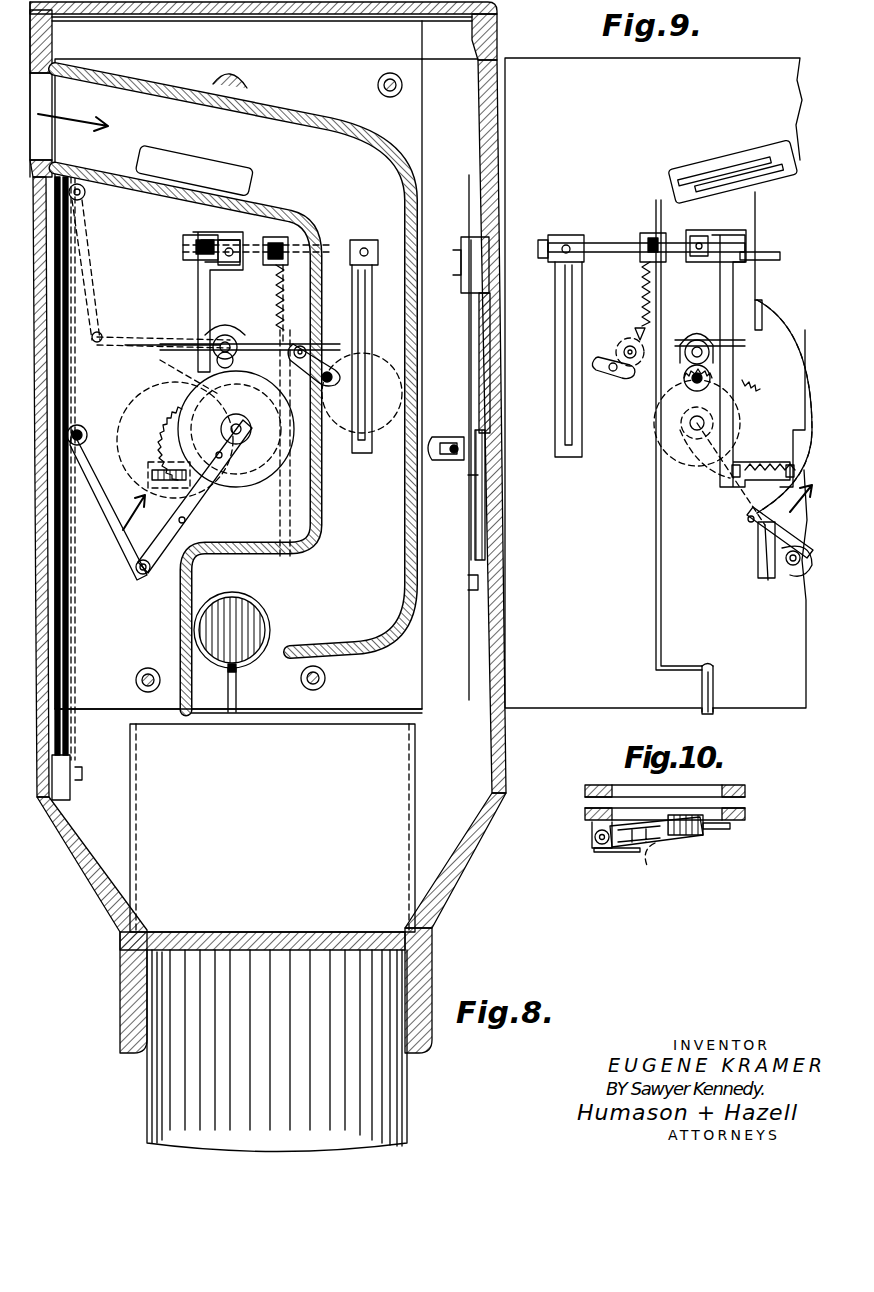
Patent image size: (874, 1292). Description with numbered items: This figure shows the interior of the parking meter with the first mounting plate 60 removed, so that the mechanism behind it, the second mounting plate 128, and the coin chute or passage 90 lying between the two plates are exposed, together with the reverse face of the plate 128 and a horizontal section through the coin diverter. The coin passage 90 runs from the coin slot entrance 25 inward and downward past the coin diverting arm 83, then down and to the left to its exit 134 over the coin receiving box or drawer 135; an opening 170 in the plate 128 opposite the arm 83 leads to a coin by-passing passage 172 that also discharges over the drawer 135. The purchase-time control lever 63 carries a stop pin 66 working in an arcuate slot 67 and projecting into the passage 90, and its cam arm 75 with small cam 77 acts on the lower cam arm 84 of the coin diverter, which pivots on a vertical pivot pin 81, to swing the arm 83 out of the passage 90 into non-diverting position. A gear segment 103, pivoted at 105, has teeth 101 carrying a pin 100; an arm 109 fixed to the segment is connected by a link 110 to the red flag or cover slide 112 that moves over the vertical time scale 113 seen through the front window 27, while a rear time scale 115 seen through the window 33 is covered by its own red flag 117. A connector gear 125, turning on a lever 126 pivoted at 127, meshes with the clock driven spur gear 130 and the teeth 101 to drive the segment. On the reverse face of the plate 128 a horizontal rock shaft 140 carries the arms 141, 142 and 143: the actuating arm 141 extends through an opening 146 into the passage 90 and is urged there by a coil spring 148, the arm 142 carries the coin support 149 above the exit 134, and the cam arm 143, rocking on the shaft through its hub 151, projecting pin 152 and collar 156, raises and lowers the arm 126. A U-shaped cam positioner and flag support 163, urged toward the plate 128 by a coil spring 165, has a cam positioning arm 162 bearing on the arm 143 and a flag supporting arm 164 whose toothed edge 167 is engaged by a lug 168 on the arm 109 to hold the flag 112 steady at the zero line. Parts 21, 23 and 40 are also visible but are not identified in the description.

In FIG. 8, the casing 21 is at (102, 880).
In FIG. 8, the cylinder / container 23 is at (277, 1051).
In FIG. 8, the coin slot entrance 25 is at (40, 98).
In FIG. 8, the front window 27 is at (60, 368).
In FIG. 8, the window 33 is at (480, 340).
In FIG. 8, the top cover 40 is at (272, 0).
In FIG. 10, the first mounting plate 60 is at (745, 818).
In FIG. 9, the purchase-time control lever 63 is at (600, 365).
In FIG. 8, the stop pin 66 is at (340, 372).
In FIG. 9, the stop pin 66 is at (610, 378).
In FIG. 8, the arcuate limited slot 67 is at (330, 365).
In FIG. 9, the arcuate limited slot 67 is at (632, 378).
In FIG. 10, the cam arm 75 is at (718, 830).
In FIG. 10, the cam 77 is at (648, 867).
In FIG. 10, the vertical pivot pin 81 is at (596, 838).
In FIG. 9, the coin diverting arm 83 is at (740, 158).
In FIG. 10, the coin diverting arm 83 is at (675, 842).
In FIG. 10, the cam arm of coin diverter 84 is at (625, 852).
In FIG. 8, the coin chute 90 is at (325, 140).
In FIG. 10, the coin chute 90 is at (598, 800).
In FIG. 8, the pin 100 is at (262, 375).
In FIG. 8, the gear teeth 101 is at (199, 430).
In FIG. 9, the gear teeth 101 is at (755, 410).
In FIG. 8, the gear segment 103 is at (242, 470).
In FIG. 9, the gear segment 103 is at (694, 480).
In FIG. 8, the pivot 105 is at (242, 447).
In FIG. 9, the pivot 105 is at (690, 430).
In FIG. 8, the flag lifting arm 109 is at (190, 503).
In FIG. 9, the flag lifting arm 109 is at (782, 548).
In FIG. 8, the link 110 is at (84, 230).
In FIG. 9, the link 110 is at (800, 575).
In FIG. 8, the cover slide 112 is at (52, 398).
In FIG. 8, the vertical time scale 113 is at (65, 567).
In FIG. 8, the rear time scale 115 is at (470, 290).
In FIG. 8, the rear time scale cover 117 is at (472, 490).
In FIG. 8, the connector gear 125 is at (236, 336).
In FIG. 9, the connector gear 125 is at (706, 338).
In FIG. 8, the connector-gear carrying arm 126 is at (195, 350).
In FIG. 9, the connector-gear carrying arm 126 is at (690, 335).
In FIG. 8, the pivot 127 is at (308, 345).
In FIG. 9, the pivot 127 is at (628, 345).
In FIG. 8, the second mounting plate 128 is at (335, 72).
In FIG. 9, the second mounting plate 128 is at (555, 75).
In FIG. 10, the second mounting plate 128 is at (600, 786).
In FIG. 9, the clock driven spur gear 130 is at (695, 388).
In FIG. 8, the coin passage exit 134 is at (235, 700).
In FIG. 9, the coin passage exit 134 is at (712, 710).
In FIG. 8, the coin receiving box 135 is at (150, 808).
In FIG. 8, the horizontal rock shaft 140 is at (330, 243).
In FIG. 9, the horizontal rock shaft 140 is at (590, 245).
In FIG. 8, the rock shaft actuating arm 141 is at (365, 270).
In FIG. 9, the rock shaft actuating arm 141 is at (565, 312).
In FIG. 8, the arm 142 is at (280, 560).
In FIG. 9, the arm 142 is at (655, 590).
In FIG. 8, the cam arm 143 is at (200, 270).
In FIG. 9, the cam arm 143 is at (728, 297).
In FIG. 8, the opening 146 is at (362, 452).
In FIG. 9, the opening 146 is at (568, 462).
In FIG. 8, the coil spring 148 is at (275, 292).
In FIG. 9, the coil spring 148 is at (640, 285).
In FIG. 8, the coin support 149 is at (226, 690).
In FIG. 9, the coin support 149 is at (712, 664).
In FIG. 8, the hub 151 is at (210, 236).
In FIG. 8, the projecting pin 152 is at (232, 240).
In FIG. 9, the projecting pin 152 is at (700, 220).
In FIG. 8, the collar 156 is at (278, 240).
In FIG. 9, the collar 156 is at (702, 265).
In FIG. 8, the cam positioning arm 162 is at (178, 383).
In FIG. 9, the cam positioning arm 162 is at (752, 335).
In FIG. 8, the cam positioner and flag support 163 is at (180, 520).
In FIG. 9, the cam positioner and flag support 163 is at (748, 510).
In FIG. 8, the flag supporting arm 164 is at (110, 345).
In FIG. 9, the flag supporting arm 164 is at (784, 406).
In FIG. 8, the coil spring 165 is at (169, 463).
In FIG. 9, the coil spring 165 is at (768, 470).
In FIG. 8, the teeth or notches 167 is at (128, 360).
In FIG. 9, the lug 168 is at (765, 530).
In FIG. 8, the opening 170 is at (236, 162).
In FIG. 9, the opening 170 is at (697, 160).
In FIG. 10, the opening 170 is at (700, 795).
In FIG. 9, the coin by-passing passage 172 is at (668, 172).